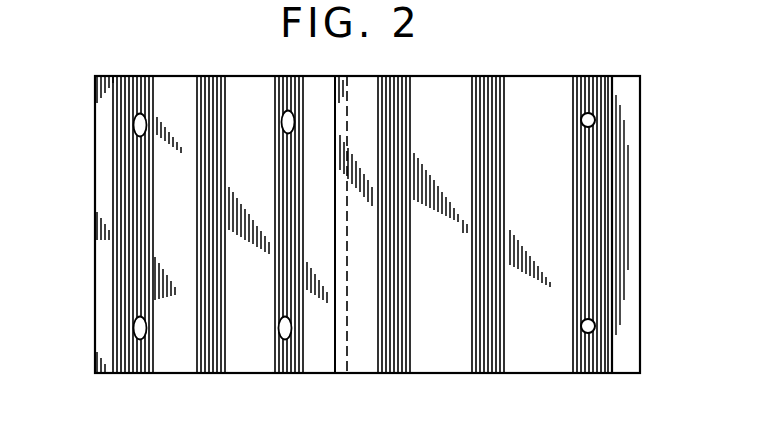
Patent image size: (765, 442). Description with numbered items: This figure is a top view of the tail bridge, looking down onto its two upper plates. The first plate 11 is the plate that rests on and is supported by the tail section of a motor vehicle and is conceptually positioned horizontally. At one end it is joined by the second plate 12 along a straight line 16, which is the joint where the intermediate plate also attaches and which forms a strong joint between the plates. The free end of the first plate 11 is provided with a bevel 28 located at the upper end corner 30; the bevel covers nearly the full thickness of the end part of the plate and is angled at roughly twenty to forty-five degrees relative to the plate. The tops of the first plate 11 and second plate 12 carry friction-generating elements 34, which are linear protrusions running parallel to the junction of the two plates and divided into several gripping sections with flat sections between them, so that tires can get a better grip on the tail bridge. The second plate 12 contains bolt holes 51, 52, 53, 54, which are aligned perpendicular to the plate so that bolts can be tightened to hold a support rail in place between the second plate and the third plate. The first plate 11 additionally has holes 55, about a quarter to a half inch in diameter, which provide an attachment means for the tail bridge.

The first plate 11 is at (538, 90).
The second plate 12 is at (248, 92).
The straight line 16 is at (334, 327).
The bevel 28 is at (625, 88).
The upper end corner 30 is at (612, 350).
The friction-generating elements 34 is at (212, 78).
The bolt hole 51 is at (136, 125).
The bolt hole 52 is at (136, 330).
The bolt hole 53 is at (281, 336).
The bolt hole 54 is at (282, 128).
The holes 55 is at (583, 125).